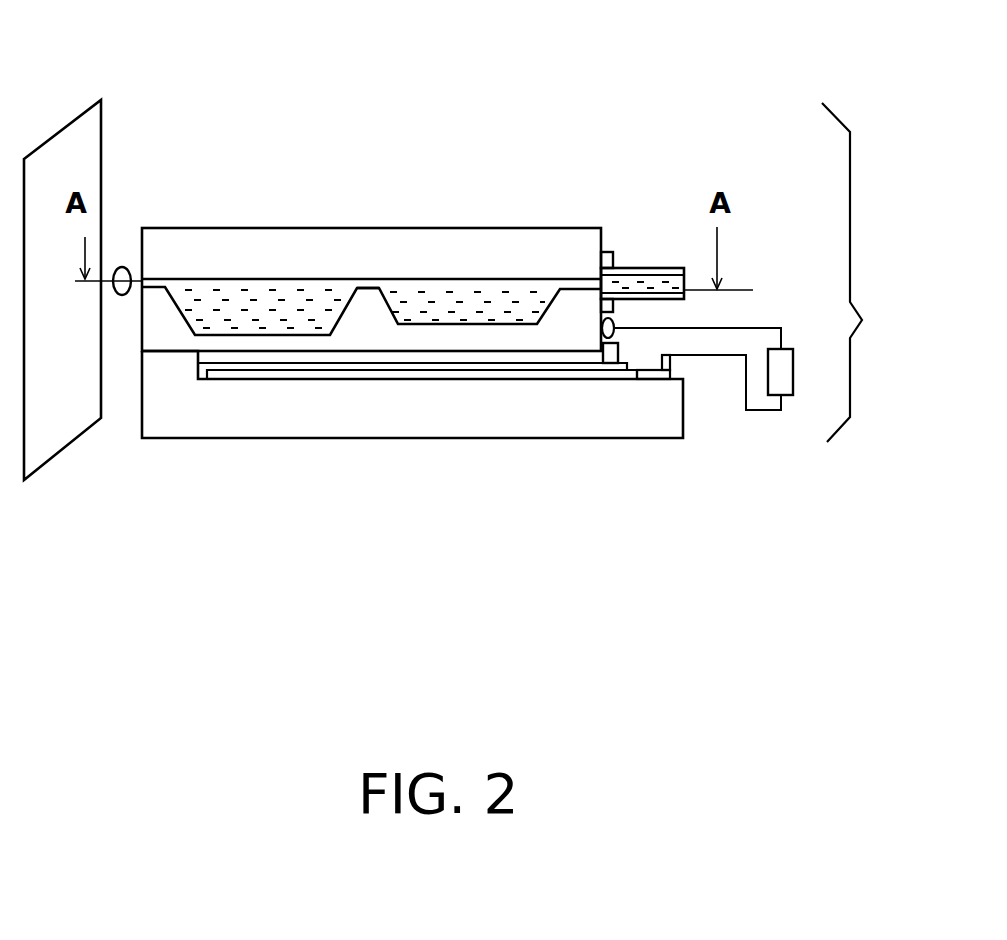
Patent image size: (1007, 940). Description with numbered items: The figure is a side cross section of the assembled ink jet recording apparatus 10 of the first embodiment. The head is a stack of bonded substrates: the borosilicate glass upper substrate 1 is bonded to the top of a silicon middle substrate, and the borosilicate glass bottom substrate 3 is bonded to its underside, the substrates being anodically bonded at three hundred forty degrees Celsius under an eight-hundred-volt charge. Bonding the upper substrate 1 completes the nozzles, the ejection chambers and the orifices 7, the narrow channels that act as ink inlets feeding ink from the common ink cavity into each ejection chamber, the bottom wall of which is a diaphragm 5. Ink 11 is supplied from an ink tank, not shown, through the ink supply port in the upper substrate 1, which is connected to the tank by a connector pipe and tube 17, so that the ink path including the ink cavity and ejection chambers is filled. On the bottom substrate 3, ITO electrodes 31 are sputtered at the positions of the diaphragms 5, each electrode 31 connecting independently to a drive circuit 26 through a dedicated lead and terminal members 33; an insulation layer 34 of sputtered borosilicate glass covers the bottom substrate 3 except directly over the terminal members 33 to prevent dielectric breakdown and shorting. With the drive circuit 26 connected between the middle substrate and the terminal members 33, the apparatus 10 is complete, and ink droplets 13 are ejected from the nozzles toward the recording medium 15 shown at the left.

The upper substrate 1 is at (206, 248).
The bottom substrate 3 is at (200, 420).
The diaphragm 5 is at (302, 347).
The orifice 7 is at (377, 287).
The ink jet recording apparatus 10 is at (872, 272).
The ink 11 is at (258, 287).
The ink droplet 13 is at (123, 267).
The recording medium 15 is at (52, 163).
The tube 17 is at (640, 280).
The drive circuit 26 is at (784, 369).
The electrode 31 is at (307, 380).
The terminal member 33 is at (648, 380).
The insulation layer 34 is at (413, 363).